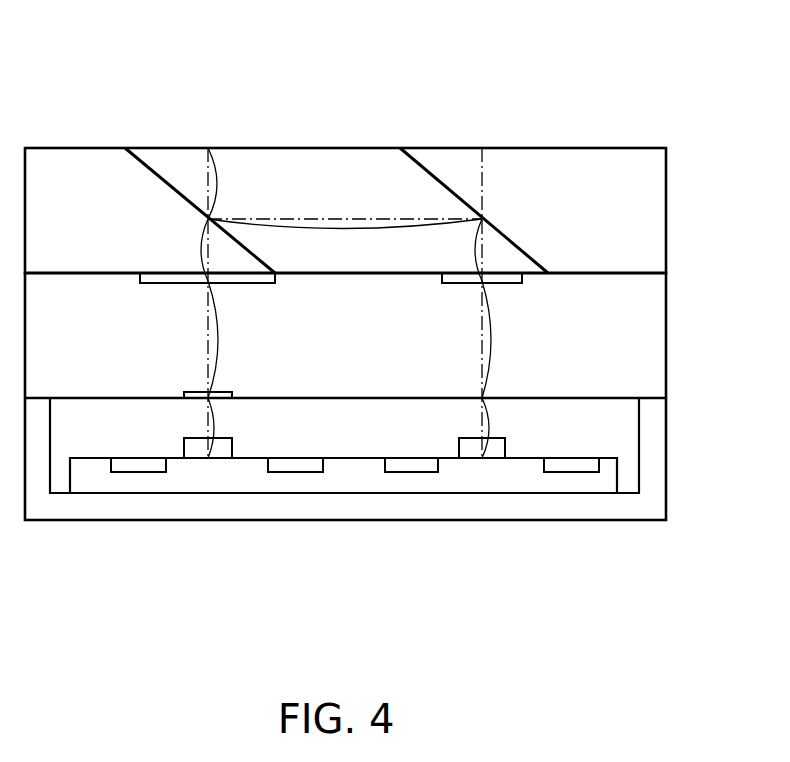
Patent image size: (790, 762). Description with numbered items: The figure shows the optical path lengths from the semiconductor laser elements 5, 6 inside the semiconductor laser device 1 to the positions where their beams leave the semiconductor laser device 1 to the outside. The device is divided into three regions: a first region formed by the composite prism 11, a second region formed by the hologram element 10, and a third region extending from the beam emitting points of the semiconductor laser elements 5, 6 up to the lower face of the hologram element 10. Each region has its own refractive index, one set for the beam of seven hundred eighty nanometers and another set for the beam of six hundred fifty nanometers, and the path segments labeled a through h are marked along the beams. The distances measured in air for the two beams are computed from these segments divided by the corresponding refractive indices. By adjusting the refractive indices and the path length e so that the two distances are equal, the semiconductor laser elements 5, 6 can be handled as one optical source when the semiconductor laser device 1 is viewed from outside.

The semiconductor laser device 1 is at (390, 315).
The semiconductor laser element 5 is at (193, 452).
The semiconductor laser element 6 is at (470, 452).
The hologram element 10 is at (658, 330).
The composite prism 11 is at (658, 178).